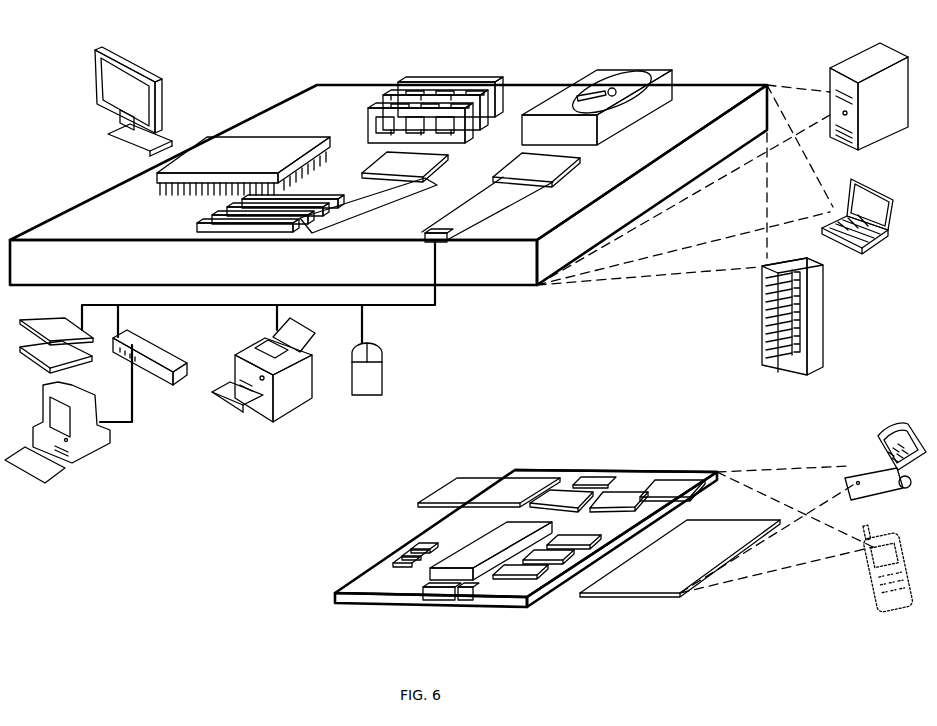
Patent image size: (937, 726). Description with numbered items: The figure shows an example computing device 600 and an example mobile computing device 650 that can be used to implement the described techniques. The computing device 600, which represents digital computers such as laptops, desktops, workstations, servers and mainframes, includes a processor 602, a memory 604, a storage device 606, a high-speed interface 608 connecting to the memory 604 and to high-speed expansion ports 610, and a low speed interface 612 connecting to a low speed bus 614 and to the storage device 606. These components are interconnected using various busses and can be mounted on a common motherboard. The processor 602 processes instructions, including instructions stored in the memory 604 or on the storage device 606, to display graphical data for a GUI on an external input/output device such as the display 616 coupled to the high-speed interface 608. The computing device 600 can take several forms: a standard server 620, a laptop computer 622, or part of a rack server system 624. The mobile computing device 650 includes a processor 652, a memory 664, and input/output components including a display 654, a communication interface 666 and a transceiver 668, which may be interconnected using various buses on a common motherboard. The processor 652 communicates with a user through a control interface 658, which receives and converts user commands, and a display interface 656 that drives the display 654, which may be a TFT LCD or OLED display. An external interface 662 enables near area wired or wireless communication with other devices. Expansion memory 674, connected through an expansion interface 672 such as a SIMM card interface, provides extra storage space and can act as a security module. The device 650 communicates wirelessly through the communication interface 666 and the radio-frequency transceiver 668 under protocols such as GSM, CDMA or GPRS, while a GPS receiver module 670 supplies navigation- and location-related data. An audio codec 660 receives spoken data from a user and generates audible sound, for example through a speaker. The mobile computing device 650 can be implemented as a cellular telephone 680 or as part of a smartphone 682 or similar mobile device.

The computing device 600 is at (257, 63).
The processor 602 is at (157, 178).
The memory 604 is at (411, 83).
The storage device 606 is at (590, 74).
The high-speed interface 608 is at (367, 150).
The high-speed expansion ports 610 is at (212, 212).
The low speed interface 612 is at (533, 167).
The low speed bus 614 is at (443, 243).
The display 616 is at (96, 56).
The standard server 620 is at (830, 71).
The laptop computer 622 is at (850, 185).
The rack server system 624 is at (758, 337).
The mobile computing device 650 is at (507, 452).
The processor 652 is at (462, 582).
The display 654 is at (680, 593).
The display interface 656 is at (527, 587).
The control interface 658 is at (560, 580).
The audio codec 660 is at (563, 563).
The external interface 662 is at (443, 590).
The memory 664 is at (402, 560).
The communication interface 666 is at (563, 500).
The transceiver 668 is at (640, 490).
The GPS receiver module 670 is at (620, 498).
The expansion interface 672 is at (500, 480).
The expansion memory 674 is at (447, 477).
The cellular telephone 680 is at (892, 425).
The smartphone 682 is at (877, 530).